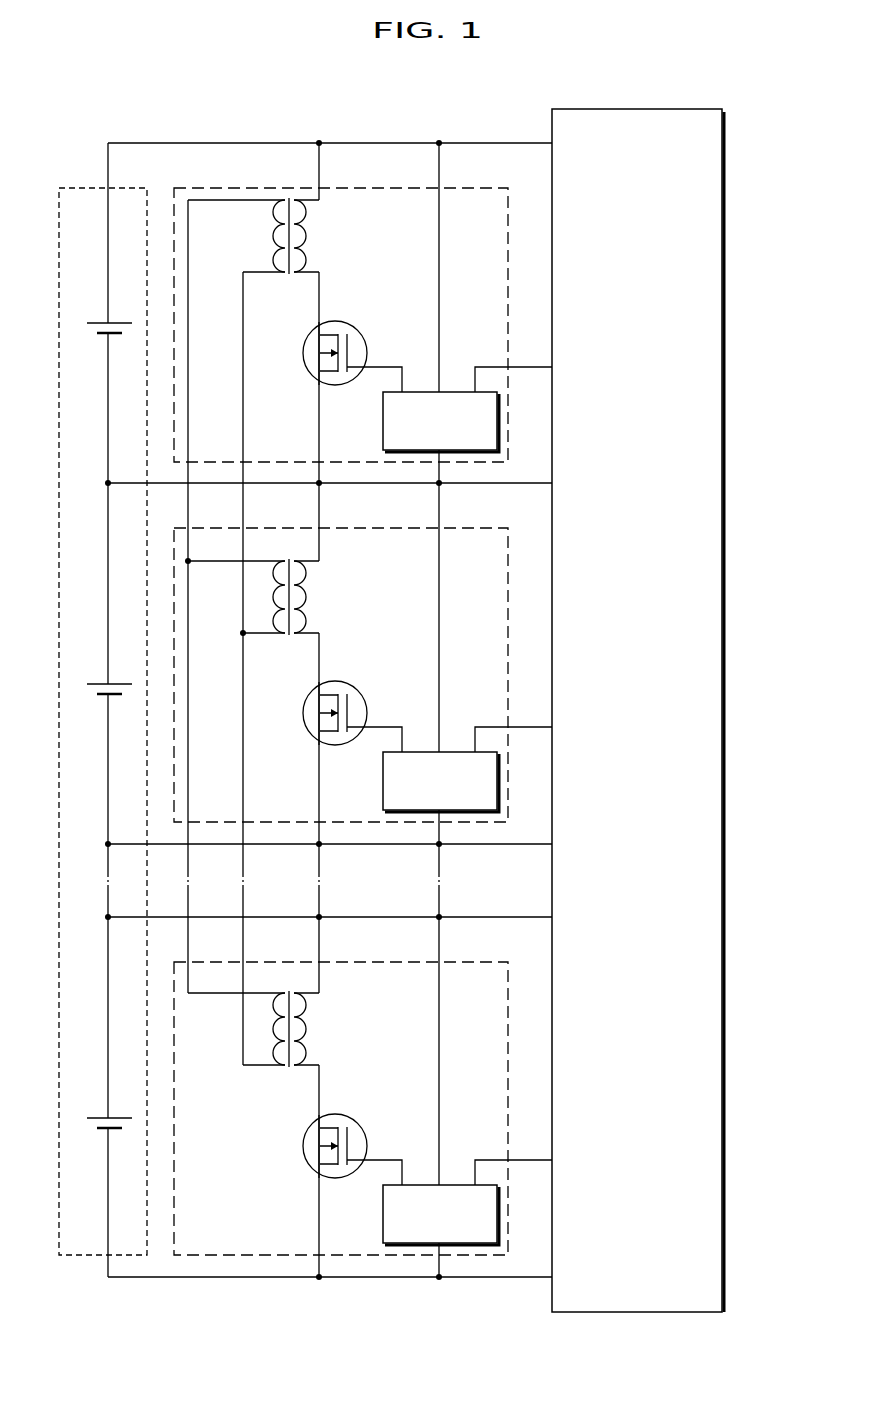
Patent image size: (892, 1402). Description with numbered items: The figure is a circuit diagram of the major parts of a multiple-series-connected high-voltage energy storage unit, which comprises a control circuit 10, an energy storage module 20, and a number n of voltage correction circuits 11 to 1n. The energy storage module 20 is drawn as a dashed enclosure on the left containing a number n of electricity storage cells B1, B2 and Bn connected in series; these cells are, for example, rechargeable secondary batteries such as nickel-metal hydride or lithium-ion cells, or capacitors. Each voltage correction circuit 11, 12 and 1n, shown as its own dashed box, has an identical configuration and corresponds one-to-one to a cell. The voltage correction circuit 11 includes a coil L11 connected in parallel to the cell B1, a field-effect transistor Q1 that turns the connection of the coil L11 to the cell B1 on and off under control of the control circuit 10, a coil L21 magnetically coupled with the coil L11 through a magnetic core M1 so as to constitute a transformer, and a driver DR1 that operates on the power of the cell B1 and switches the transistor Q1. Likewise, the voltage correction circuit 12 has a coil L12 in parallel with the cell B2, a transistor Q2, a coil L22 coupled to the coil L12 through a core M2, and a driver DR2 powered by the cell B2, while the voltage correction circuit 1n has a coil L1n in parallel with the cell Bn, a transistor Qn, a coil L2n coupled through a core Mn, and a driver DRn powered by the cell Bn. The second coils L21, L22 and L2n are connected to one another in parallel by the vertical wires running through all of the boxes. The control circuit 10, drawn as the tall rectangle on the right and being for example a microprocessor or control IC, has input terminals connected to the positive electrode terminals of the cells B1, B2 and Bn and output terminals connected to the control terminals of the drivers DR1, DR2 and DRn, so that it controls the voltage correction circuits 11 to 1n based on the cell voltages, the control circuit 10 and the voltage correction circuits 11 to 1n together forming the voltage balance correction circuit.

The control circuit 10 is at (722, 116).
The energy storage module 20 is at (80, 186).
The voltage correction circuit 11 is at (465, 185).
The voltage correction circuit 12 is at (465, 525).
The voltage correction circuit 1n is at (465, 960).
The electricity storage cell B1 is at (103, 314).
The electricity storage cell B2 is at (103, 674).
The electricity storage cell Bn is at (103, 1108).
The coil L11 is at (323, 236).
The coil L21 is at (255, 236).
The coil L12 is at (323, 597).
The coil L22 is at (273, 585).
The coil L1n is at (323, 1029).
The coil L2n is at (272, 1016).
The core M1 is at (288, 249).
The core M2 is at (288, 611).
The core Mn is at (288, 1043).
The field-effect transistor Q1 is at (352, 347).
The field-effect transistor Q2 is at (352, 707).
The field-effect transistor Qn is at (352, 1140).
The driver DR1 is at (457, 392).
The driver DR2 is at (457, 752).
The driver DRn is at (457, 1185).